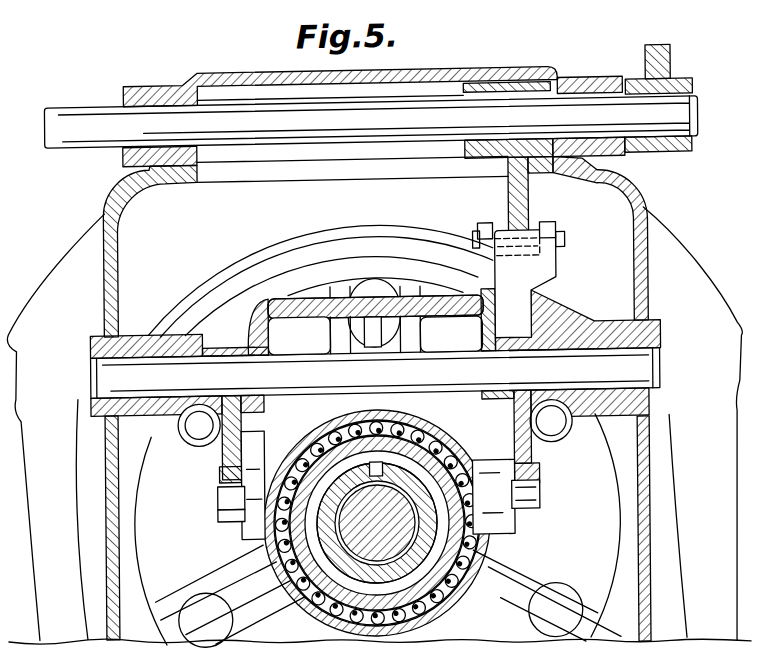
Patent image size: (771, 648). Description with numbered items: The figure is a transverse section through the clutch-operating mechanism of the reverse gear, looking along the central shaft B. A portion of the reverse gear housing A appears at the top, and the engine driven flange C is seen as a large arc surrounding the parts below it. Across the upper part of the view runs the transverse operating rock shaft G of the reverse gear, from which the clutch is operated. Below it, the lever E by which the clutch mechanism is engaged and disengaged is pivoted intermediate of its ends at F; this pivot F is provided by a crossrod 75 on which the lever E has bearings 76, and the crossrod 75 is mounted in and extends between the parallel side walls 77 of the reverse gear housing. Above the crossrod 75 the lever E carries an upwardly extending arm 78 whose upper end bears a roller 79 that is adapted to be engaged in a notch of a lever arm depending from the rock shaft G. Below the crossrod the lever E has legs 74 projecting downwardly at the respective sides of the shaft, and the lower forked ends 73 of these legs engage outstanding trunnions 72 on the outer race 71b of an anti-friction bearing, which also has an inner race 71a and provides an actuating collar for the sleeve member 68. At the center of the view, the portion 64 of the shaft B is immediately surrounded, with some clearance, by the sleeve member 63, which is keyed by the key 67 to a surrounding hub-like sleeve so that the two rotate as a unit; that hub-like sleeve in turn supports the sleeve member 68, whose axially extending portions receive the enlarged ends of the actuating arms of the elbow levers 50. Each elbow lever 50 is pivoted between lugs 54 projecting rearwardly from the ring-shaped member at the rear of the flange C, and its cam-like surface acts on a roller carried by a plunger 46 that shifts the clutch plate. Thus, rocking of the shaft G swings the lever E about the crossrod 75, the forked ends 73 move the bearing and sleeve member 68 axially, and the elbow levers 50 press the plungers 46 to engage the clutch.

The transverse operating rock shaft G is at (105, 111).
The reverse gear housing A is at (118, 185).
The engine driven flange C is at (357, 226).
The roller 79 is at (536, 232).
The upwardly extending arm 78 is at (487, 272).
The lever E is at (556, 265).
The bearings 76 is at (540, 321).
The lugs 54 is at (413, 294).
The plungers 46 is at (390, 333).
The elbow lever 50 is at (377, 348).
The pivot F is at (662, 328).
The crossrod 75 is at (300, 381).
The key 67 is at (382, 462).
The outer race 71b is at (455, 442).
The inner race 71a is at (458, 454).
The sleeve member 68 is at (320, 449).
The legs 74 is at (233, 454).
The lower forked ends 73 is at (220, 490).
The trunnions 72 is at (220, 507).
The side walls 77 is at (107, 480).
The central shaft B is at (560, 496).
The shaft portion 64 is at (540, 500).
The sleeve member 63 is at (420, 547).